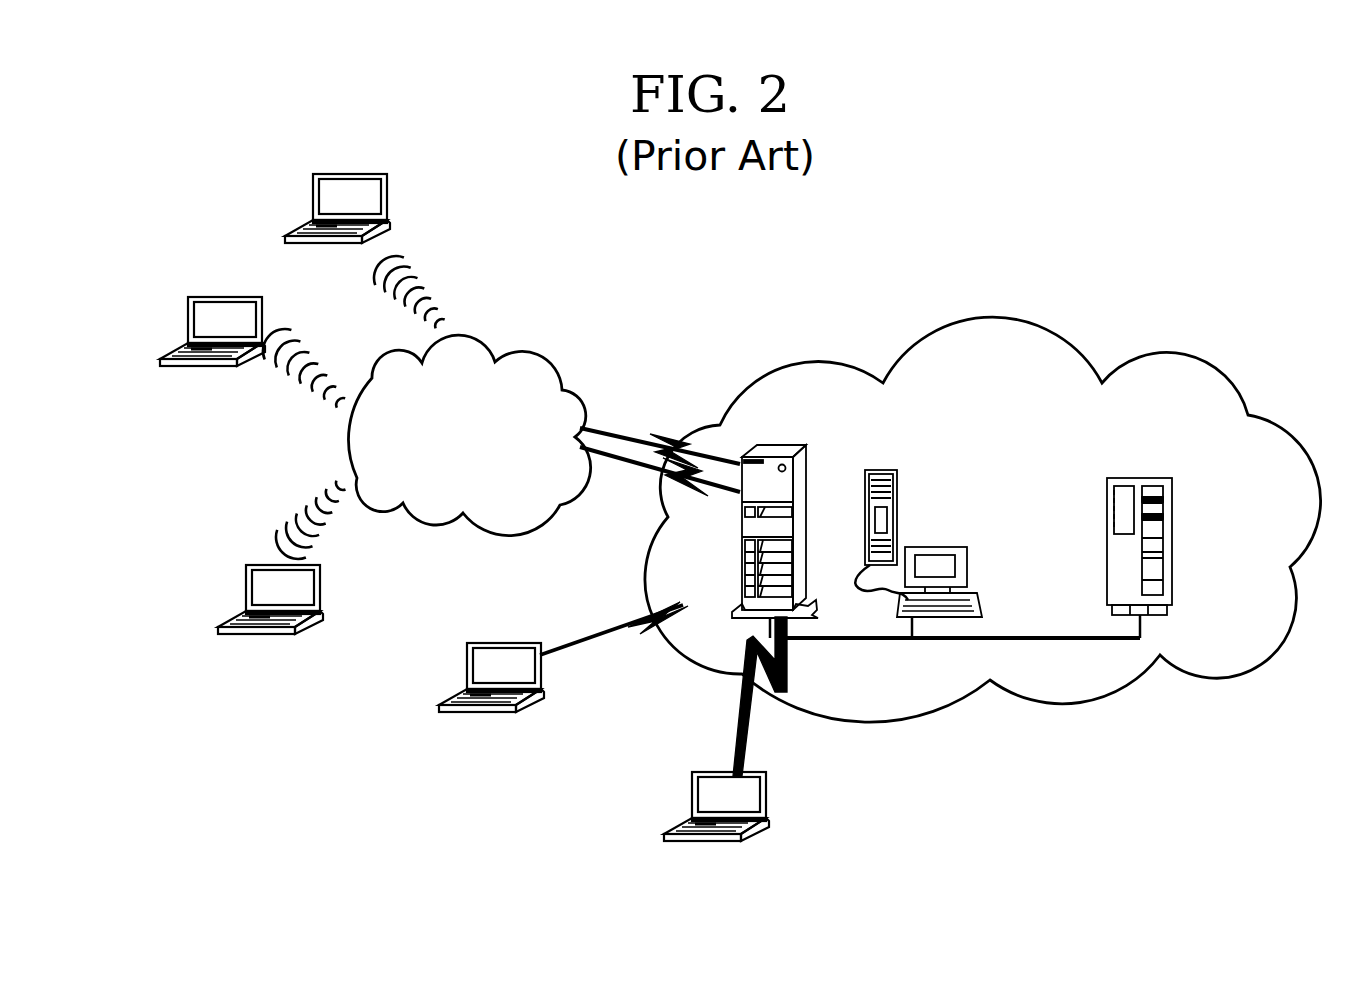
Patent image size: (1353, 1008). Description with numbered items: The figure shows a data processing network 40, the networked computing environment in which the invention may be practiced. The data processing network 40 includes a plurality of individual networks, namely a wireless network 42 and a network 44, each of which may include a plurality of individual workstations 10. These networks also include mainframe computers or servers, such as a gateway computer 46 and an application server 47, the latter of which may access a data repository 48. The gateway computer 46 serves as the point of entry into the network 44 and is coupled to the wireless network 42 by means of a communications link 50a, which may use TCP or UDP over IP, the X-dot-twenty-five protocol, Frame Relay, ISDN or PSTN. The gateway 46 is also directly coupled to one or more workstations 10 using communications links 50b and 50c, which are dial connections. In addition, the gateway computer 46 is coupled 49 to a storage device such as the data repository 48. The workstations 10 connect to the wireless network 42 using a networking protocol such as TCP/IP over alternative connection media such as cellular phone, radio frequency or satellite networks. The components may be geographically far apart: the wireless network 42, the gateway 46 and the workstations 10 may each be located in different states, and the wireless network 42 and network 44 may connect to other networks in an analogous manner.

The workstation 10 is at (483, 504).
The data processing network 40 is at (1127, 860).
The wireless network 42 is at (470, 425).
The network 44 is at (983, 512).
The gateway computer 46 is at (790, 535).
The application server 47 is at (918, 554).
The data repository 48 is at (1163, 558).
The coupling 49 is at (959, 655).
The communications link 50a is at (660, 468).
The communications link 50b is at (614, 627).
The communications link 50c is at (767, 696).